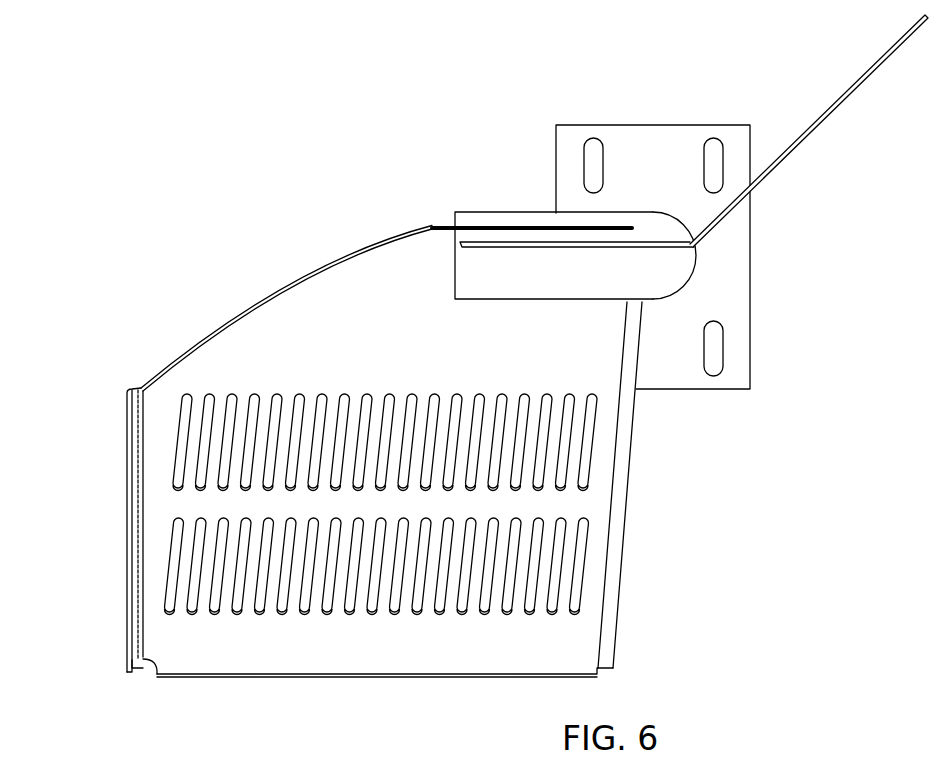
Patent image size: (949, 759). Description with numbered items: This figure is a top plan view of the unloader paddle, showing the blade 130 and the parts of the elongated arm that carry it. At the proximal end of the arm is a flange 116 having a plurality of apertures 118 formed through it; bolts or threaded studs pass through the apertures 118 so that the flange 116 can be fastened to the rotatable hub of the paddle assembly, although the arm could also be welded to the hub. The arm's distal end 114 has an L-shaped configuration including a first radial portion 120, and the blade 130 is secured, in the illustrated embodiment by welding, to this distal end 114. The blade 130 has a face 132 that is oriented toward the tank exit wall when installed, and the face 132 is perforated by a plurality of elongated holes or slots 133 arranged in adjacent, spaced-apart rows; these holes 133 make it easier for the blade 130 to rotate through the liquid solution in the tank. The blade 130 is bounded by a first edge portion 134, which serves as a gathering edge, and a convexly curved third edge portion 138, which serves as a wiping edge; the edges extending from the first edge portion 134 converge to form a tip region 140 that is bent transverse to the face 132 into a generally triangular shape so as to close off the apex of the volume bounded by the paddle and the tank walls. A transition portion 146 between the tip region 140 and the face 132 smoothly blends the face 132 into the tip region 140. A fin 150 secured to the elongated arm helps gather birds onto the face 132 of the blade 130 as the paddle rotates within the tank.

The distal end 114 is at (667, 282).
The flange 116 is at (676, 239).
The apertures 118 is at (598, 143).
The first radial portion 120 is at (490, 287).
The blade 130 is at (386, 282).
The face 132 is at (385, 512).
The holes or slots 133 is at (232, 392).
The first edge portion 134 is at (627, 513).
The convexly curved third edge portion 138 is at (270, 293).
The tip region 140 is at (120, 598).
The transition portion 146 is at (140, 647).
The fin 150 is at (857, 92).